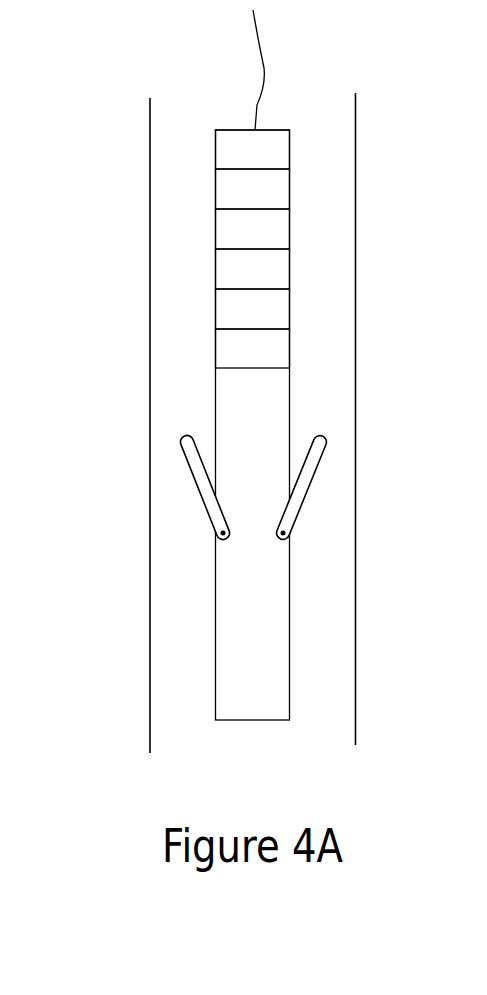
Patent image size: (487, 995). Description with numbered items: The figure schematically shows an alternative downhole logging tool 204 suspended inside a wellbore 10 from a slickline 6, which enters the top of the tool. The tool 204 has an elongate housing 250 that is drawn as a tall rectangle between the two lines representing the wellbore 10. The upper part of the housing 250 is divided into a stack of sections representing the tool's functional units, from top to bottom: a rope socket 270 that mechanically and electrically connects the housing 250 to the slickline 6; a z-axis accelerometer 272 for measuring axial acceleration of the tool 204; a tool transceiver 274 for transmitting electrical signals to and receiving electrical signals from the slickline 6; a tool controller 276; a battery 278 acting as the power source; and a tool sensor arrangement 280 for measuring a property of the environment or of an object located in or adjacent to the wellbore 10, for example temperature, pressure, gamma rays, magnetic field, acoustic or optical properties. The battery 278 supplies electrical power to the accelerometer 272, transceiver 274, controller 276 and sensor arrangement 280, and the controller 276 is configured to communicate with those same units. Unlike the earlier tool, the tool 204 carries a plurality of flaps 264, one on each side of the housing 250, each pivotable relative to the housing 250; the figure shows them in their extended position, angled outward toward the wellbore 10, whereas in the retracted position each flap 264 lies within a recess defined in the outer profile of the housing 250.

The slickline 6 is at (264, 70).
The wellbore 10 is at (356, 172).
The downhole logging tool 204 is at (183, 610).
The housing 250 is at (290, 680).
The flaps 264 is at (193, 475).
The rope socket 270 is at (225, 152).
The z-axis accelerometer 272 is at (235, 191).
The tool transceiver 274 is at (235, 232).
The tool controller 276 is at (235, 267).
The battery 278 is at (235, 309).
The tool sensor arrangement 280 is at (235, 348).